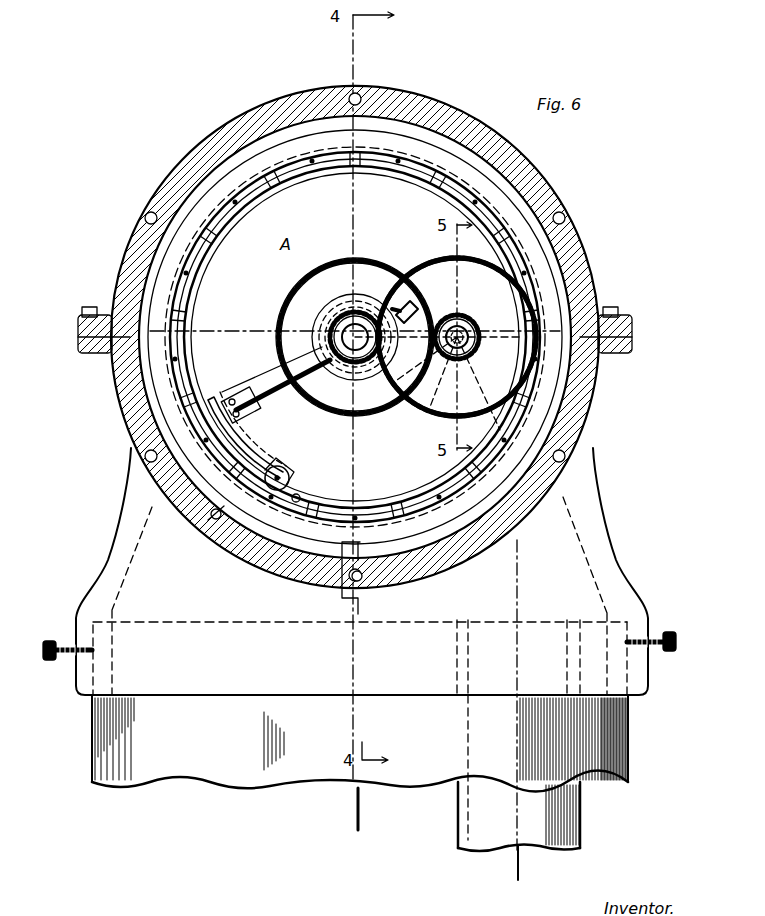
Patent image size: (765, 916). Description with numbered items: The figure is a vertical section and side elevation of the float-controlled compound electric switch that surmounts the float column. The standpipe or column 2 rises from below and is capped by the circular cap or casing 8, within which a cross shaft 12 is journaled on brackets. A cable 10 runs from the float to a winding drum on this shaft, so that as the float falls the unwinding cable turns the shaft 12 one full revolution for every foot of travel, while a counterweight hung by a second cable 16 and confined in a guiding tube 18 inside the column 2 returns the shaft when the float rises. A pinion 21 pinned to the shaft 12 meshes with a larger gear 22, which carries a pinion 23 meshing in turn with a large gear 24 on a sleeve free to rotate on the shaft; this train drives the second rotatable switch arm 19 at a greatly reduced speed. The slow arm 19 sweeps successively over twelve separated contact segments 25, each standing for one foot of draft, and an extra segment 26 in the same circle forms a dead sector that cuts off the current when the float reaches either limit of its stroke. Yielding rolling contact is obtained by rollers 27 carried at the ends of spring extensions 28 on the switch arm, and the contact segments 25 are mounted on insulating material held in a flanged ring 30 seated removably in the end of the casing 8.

The standpipe or column 2 is at (632, 722).
The cap or casing 8 is at (562, 196).
The cable 10 is at (360, 806).
The cross shaft 12 is at (353, 352).
The cable 16 is at (520, 864).
The guiding tube 18 is at (519, 773).
The second rotatable switch arm 19 is at (275, 386).
The pinion 21 is at (388, 342).
The larger gear 22 is at (422, 403).
The pinion 23 is at (459, 349).
The large gear 24 is at (339, 337).
The contact segments 25 is at (297, 495).
The extra segment 26 is at (405, 172).
The rollers 27 is at (290, 473).
The spring extensions 28 is at (267, 442).
The flanged ring 30 is at (212, 518).